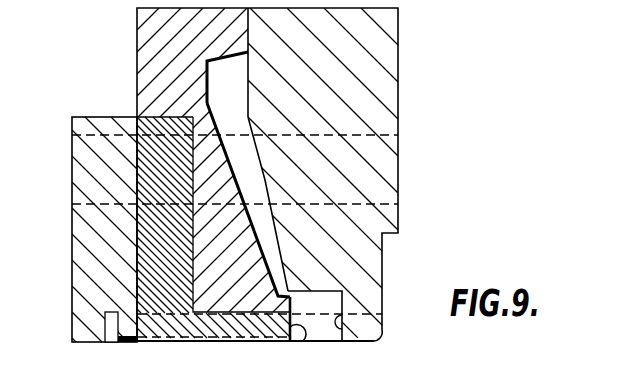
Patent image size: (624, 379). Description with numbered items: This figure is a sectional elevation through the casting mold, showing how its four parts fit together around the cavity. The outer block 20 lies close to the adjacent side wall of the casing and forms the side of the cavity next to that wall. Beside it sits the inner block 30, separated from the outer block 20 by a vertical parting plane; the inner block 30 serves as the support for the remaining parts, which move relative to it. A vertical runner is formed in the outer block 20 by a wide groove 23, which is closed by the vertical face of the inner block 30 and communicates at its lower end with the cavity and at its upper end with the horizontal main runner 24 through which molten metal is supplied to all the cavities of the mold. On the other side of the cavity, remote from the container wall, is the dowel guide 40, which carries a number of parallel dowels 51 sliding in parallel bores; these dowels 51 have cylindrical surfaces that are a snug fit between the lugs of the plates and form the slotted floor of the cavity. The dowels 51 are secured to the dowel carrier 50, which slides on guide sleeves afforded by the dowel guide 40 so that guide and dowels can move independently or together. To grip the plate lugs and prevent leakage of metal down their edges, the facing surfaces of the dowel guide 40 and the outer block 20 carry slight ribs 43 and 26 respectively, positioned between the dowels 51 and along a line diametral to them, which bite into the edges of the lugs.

The outer block 20 is at (382, 153).
The wide groove 23 is at (260, 187).
The horizontal main runner 24 is at (226, 68).
The rib 26 is at (345, 314).
The inner block 30 is at (137, 42).
The dowel guide 40 is at (140, 336).
The rib 43 is at (317, 334).
The dowel carrier 50 is at (82, 261).
The dowel 51 is at (373, 338).